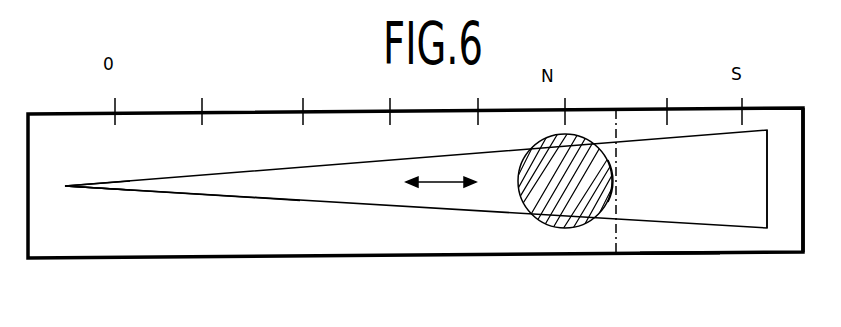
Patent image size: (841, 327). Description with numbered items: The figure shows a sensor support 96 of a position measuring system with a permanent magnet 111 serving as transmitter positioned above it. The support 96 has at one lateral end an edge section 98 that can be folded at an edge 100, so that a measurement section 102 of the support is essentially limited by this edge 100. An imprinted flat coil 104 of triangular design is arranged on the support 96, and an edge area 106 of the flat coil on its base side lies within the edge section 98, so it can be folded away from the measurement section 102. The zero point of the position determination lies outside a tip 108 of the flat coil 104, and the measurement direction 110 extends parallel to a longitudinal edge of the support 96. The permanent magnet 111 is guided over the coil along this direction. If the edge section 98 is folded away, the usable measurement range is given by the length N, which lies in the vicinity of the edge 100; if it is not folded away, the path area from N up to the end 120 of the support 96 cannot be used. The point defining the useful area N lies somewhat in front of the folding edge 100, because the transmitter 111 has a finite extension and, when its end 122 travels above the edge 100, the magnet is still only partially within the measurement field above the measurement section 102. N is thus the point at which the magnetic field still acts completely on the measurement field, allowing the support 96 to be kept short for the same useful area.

The support 96 is at (238, 236).
The edge section 98 is at (672, 238).
The edge 100 is at (618, 230).
The measurement section 102 is at (427, 237).
The imprinted flat coil 104 is at (218, 187).
The edge area 106 is at (740, 155).
The tip 108 is at (61, 186).
The measurement direction 110 is at (430, 184).
The permanent magnet 111 is at (551, 204).
The end 120 is at (805, 227).
The end 122 is at (618, 173).